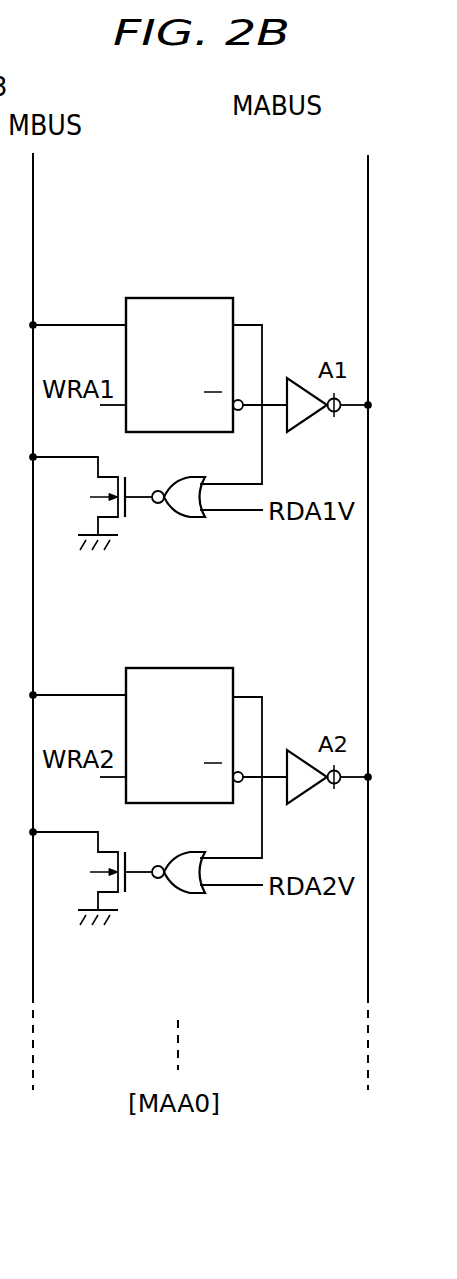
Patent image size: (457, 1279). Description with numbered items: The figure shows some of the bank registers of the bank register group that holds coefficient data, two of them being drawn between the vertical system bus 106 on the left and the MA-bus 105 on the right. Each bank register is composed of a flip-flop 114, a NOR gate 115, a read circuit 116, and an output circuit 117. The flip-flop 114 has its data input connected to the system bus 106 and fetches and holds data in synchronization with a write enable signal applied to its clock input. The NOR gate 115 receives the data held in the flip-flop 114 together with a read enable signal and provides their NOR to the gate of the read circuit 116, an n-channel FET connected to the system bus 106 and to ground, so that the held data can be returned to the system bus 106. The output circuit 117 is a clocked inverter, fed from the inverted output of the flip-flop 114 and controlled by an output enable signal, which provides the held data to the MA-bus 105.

The MA-bus 105 is at (368, 178).
The system bus 106 is at (33, 182).
The flip-flop 114 is at (223, 298).
The NOR gate 115 is at (200, 519).
The read circuit 116 is at (147, 463).
The output circuit 117 is at (303, 432).